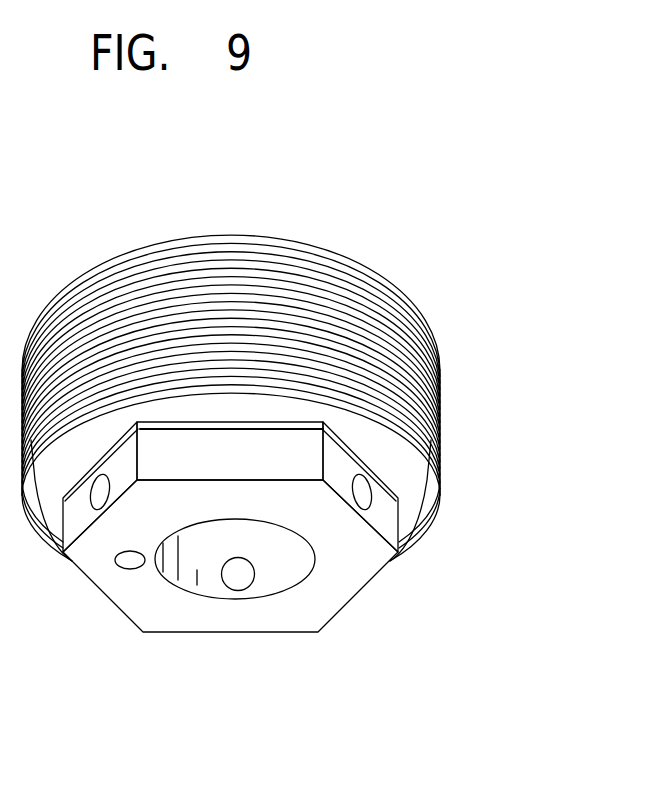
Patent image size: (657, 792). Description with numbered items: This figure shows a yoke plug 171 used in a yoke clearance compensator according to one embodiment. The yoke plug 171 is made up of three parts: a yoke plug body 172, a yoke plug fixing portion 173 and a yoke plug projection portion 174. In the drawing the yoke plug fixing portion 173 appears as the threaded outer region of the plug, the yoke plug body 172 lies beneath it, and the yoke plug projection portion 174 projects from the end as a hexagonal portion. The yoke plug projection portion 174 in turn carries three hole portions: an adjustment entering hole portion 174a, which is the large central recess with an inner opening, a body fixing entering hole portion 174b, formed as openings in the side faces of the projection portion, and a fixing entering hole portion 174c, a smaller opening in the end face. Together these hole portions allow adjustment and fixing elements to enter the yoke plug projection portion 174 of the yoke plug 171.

The yoke plug 171 is at (522, 166).
The yoke plug body 172 is at (402, 475).
The yoke plug fixing portion 173 is at (410, 373).
The yoke plug projection portion 174 is at (289, 568).
The adjustment entering hole portion 174a is at (272, 560).
The body fixing entering hole portion 174b is at (362, 498).
The fixing entering hole portion 174c is at (125, 562).